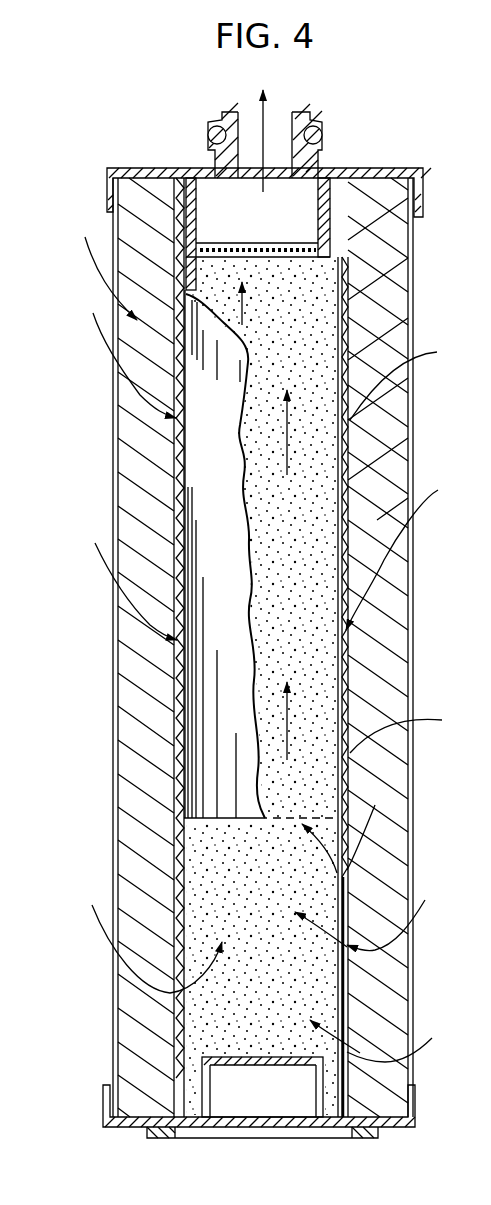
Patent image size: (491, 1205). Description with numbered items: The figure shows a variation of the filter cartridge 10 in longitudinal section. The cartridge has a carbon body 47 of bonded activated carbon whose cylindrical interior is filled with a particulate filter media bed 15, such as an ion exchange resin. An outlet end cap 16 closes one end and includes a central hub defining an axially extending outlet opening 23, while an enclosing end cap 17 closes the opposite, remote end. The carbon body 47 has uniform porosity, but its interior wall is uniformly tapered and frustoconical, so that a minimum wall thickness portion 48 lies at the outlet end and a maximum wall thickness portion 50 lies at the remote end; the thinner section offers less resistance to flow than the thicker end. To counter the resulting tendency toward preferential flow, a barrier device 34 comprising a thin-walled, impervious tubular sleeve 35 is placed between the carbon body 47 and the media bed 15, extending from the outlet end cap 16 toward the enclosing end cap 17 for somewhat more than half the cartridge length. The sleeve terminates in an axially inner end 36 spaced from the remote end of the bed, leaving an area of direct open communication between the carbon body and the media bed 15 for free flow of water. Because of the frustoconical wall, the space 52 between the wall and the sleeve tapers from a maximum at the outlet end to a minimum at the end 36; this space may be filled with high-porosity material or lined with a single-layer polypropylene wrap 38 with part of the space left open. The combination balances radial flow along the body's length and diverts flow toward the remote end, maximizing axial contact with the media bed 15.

The filter cartridge 10 is at (98, 237).
The particulate filter media bed 15 is at (322, 498).
The outlet end cap 16 is at (147, 168).
The enclosing end cap 17 is at (128, 1130).
The outlet opening 23 is at (279, 117).
The barrier device 34 is at (212, 457).
The tubular sleeve 35 is at (343, 528).
The axially inner end 36 is at (242, 818).
The polypropylene wrap 38 is at (350, 462).
The carbon body 47 is at (184, 530).
The minimum wall thickness portion 48 is at (140, 253).
The maximum wall thickness portion 50 is at (140, 1035).
The space 52 is at (350, 342).